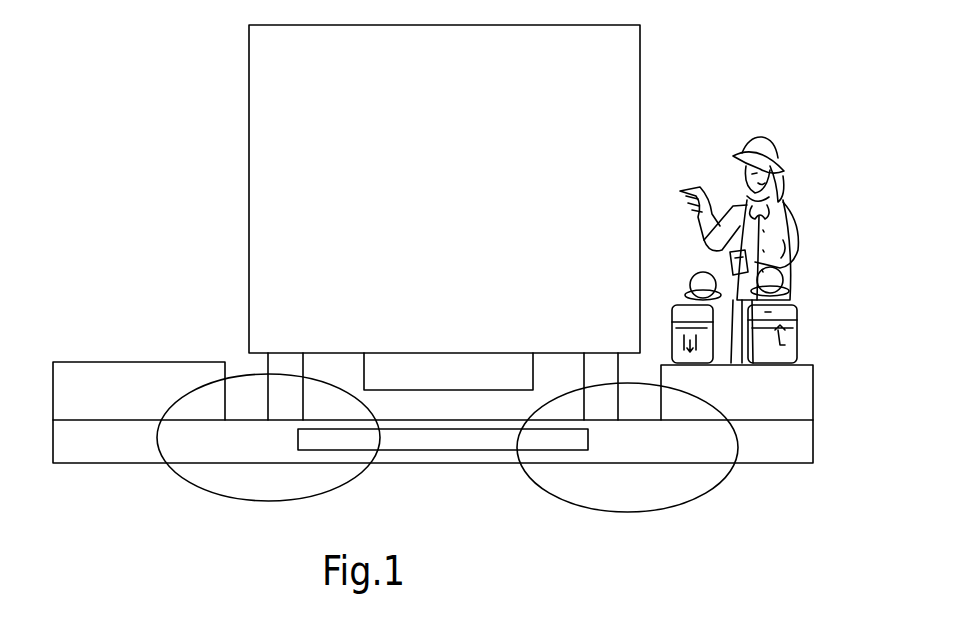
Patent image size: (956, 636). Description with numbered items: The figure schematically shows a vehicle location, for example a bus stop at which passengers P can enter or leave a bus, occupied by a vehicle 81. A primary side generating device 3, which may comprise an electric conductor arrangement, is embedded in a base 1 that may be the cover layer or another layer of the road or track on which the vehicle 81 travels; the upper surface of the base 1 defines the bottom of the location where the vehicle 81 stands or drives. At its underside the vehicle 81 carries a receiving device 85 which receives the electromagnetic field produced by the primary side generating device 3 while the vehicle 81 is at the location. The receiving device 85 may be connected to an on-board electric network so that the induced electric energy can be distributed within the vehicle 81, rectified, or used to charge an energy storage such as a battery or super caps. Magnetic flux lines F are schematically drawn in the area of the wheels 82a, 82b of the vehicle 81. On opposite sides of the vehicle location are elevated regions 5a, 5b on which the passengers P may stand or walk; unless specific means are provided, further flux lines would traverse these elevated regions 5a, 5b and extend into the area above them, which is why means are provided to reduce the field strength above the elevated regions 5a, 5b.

The base 1 is at (110, 452).
The primary side generating device 3 is at (442, 440).
The elevated region 5a is at (82, 360).
The elevated region 5b is at (807, 363).
The vehicle 81 is at (249, 123).
The wheel 82a is at (292, 362).
The wheel 82b is at (592, 373).
The receiving device 85 is at (373, 350).
The magnetic flux lines F is at (243, 375).
The passengers P is at (696, 180).